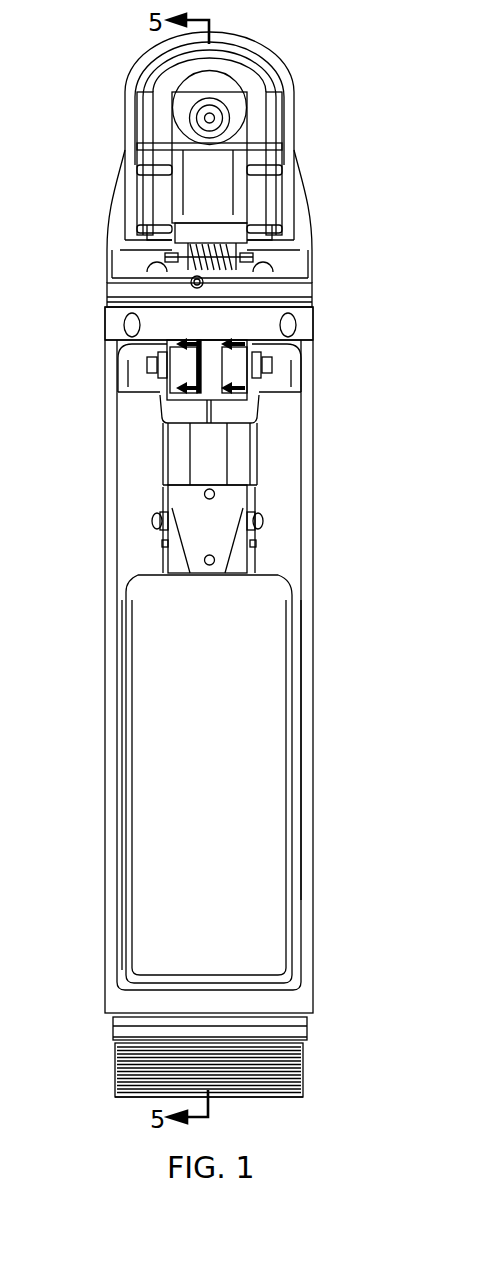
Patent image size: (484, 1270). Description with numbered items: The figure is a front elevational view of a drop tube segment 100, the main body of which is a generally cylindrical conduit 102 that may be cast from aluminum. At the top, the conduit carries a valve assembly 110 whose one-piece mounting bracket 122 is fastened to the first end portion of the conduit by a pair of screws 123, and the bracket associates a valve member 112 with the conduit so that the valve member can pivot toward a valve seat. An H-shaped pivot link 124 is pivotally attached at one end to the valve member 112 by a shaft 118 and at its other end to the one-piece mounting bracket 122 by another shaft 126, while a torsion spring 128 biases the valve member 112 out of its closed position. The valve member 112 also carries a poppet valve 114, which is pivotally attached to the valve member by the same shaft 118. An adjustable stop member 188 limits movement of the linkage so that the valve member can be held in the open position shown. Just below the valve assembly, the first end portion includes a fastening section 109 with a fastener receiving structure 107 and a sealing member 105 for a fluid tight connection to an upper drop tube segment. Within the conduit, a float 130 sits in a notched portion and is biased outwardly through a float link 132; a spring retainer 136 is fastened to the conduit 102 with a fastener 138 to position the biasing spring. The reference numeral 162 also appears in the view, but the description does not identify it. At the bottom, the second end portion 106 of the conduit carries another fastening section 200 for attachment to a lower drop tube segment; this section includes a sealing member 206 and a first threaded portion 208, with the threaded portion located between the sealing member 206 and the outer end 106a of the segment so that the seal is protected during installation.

The drop tube segment 100 is at (258, 570).
The conduit 102 is at (270, 655).
The sealing member 105 is at (315, 303).
The second end portion 106 is at (112, 1098).
The outer end 106a is at (290, 1097).
The fastener receiving structure 107 is at (259, 330).
The fastening section 109 is at (267, 319).
The valve assembly 110 is at (231, 165).
The valve member 112 is at (282, 72).
The poppet valve 114 is at (216, 81).
The shaft 118 is at (255, 165).
The one-piece mounting bracket 122 is at (132, 273).
The screws 123 is at (296, 272).
The H-shaped pivot link 124 is at (147, 231).
The shaft 126 is at (294, 234).
The torsion spring 128 is at (215, 250).
The float 130 is at (292, 803).
The float link 132 is at (265, 486).
The spring retainer 136 is at (192, 418).
The fastener 138 is at (258, 421).
The guide 162 is at (392, 631).
The adjustable stop member 188 is at (191, 283).
The fastening section 200 is at (330, 1032).
The sealing member 206 is at (112, 1032).
The first threaded portion 208 is at (303, 1058).